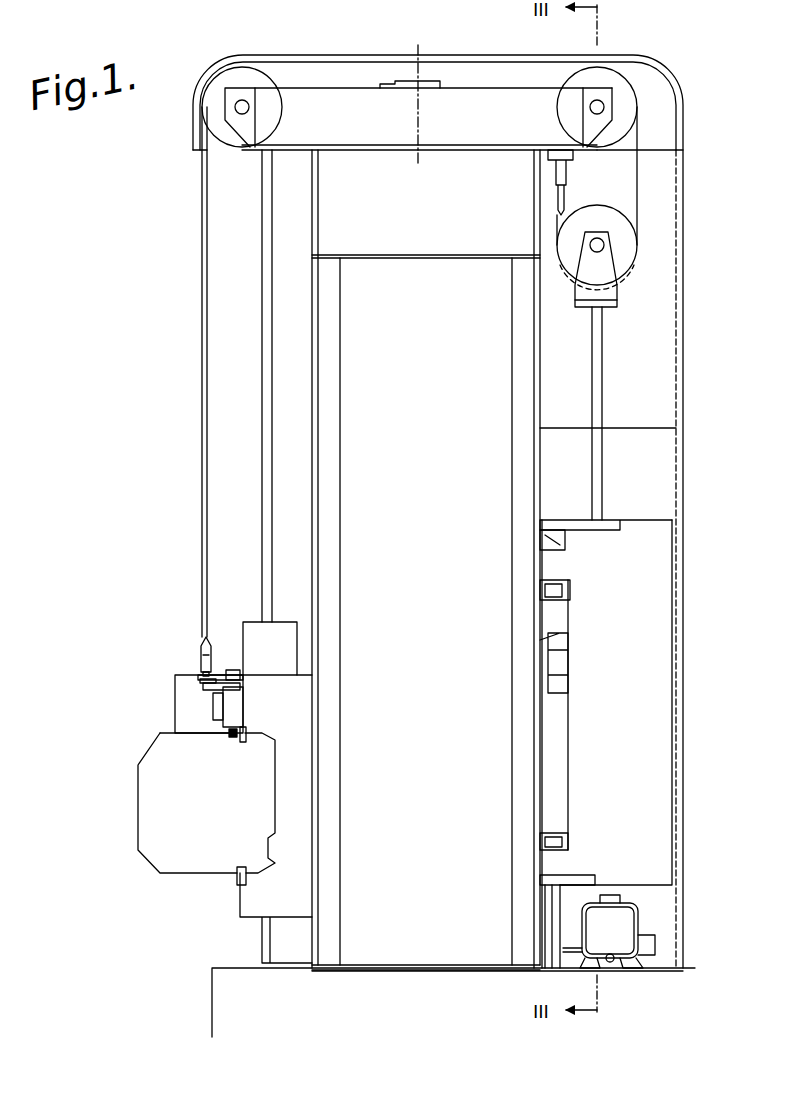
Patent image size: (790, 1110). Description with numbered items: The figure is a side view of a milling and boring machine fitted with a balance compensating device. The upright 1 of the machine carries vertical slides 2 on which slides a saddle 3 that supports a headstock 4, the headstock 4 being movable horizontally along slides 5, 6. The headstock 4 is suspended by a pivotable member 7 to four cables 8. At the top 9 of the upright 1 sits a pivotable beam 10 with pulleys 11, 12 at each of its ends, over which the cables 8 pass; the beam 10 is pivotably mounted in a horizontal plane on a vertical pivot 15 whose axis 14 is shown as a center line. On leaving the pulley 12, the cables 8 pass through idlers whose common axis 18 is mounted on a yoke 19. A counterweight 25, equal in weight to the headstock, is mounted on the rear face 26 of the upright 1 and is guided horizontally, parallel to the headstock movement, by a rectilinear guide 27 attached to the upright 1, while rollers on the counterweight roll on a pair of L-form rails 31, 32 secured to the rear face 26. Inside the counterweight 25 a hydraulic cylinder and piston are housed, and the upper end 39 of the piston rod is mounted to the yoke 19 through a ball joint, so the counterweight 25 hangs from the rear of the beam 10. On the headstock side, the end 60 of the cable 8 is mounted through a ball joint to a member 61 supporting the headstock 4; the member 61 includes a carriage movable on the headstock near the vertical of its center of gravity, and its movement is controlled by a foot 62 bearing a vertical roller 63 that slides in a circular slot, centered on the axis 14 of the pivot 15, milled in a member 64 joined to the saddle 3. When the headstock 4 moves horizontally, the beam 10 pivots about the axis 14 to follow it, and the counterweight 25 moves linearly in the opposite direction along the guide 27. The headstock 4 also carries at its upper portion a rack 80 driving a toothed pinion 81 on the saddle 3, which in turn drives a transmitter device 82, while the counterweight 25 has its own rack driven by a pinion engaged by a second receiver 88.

The upright 1 is at (426, 560).
The vertical slides 2 is at (275, 448).
The saddle 3 is at (237, 704).
The headstock 4 is at (225, 848).
The slide 5 is at (248, 735).
The slide 6 is at (238, 880).
The pivotable member 7 is at (197, 648).
The cables 8 is at (200, 428).
The top of the upright 9 is at (480, 143).
The pivotable beam 10 is at (292, 95).
The pulley 11 is at (208, 105).
The pulley 12 is at (620, 85).
The axis of the pivot 14 is at (415, 118).
The vertical pivot 15 is at (374, 78).
The common axis of the idlers 18 is at (618, 258).
The yoke 19 is at (612, 292).
The counterweight 25 is at (652, 788).
The rear face of the upright 26 is at (544, 778).
The rectilinear guide 27 is at (566, 542).
The rail 31 is at (560, 833).
The rail 32 is at (570, 600).
The upper end of the piston rod 39 is at (600, 392).
The end of the cable 60 is at (210, 656).
The member supporting the headstock 61 is at (212, 676).
The foot 62 is at (200, 678).
The vertical roller 63 is at (222, 688).
The member joined to the saddle 64 is at (238, 676).
The rack 80 is at (233, 738).
The toothed pinion 81 is at (222, 722).
The transmitter device 82 is at (242, 708).
The second receiver 88 is at (558, 681).